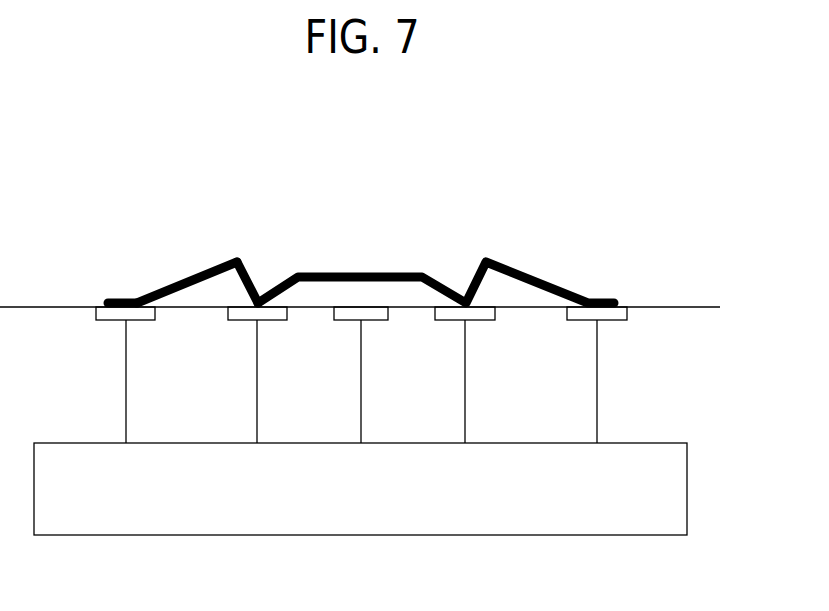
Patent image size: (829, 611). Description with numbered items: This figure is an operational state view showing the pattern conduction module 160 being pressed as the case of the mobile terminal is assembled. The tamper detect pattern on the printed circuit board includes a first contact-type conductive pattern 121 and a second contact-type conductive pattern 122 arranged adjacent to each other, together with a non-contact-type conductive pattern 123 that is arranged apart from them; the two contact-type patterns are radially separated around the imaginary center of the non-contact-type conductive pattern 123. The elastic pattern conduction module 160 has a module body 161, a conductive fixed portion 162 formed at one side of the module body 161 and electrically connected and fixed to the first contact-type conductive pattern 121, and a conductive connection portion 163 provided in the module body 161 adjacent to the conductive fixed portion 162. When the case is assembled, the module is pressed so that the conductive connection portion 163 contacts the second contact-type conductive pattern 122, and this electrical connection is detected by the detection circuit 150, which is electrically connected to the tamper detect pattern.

The first contact-type conductive pattern 121 is at (621, 323).
The second contact-type conductive pattern 122 is at (492, 322).
The non-contact-type conductive pattern 123 is at (385, 322).
The detection circuit 150 is at (360, 489).
The pattern conduction module 160 is at (354, 211).
The module body 161 is at (187, 270).
The conductive fixed portion 162 is at (124, 300).
The conductive connection portion 163 is at (238, 300).